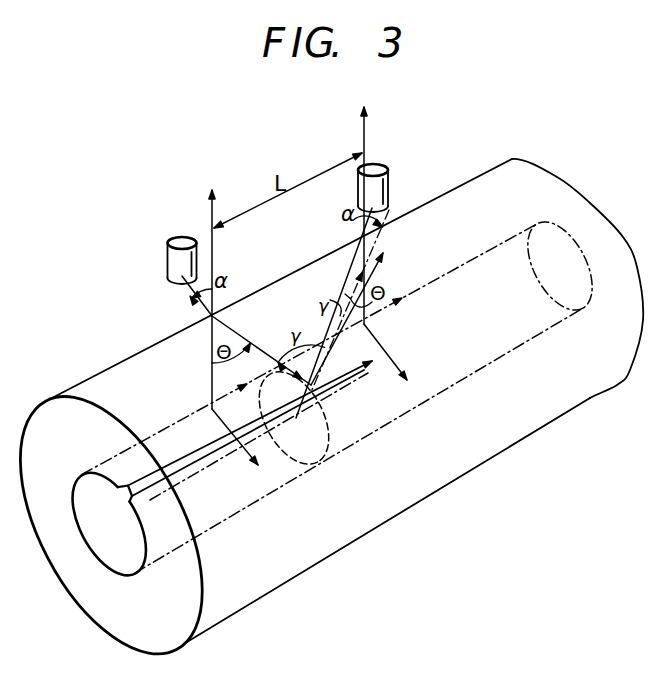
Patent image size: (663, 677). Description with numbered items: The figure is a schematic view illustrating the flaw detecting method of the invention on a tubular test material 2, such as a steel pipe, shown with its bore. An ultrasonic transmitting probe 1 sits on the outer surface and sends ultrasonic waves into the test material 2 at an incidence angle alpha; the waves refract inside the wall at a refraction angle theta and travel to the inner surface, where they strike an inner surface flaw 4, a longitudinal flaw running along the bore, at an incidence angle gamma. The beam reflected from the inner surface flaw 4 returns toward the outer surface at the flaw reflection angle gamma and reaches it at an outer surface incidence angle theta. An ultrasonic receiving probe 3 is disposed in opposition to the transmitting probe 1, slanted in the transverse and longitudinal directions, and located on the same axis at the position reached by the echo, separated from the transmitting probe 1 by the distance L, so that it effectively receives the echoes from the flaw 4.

The ultrasonic transmitting probe 1 is at (167, 262).
The test material 2 is at (130, 358).
The ultrasonic receiving probe 3 is at (388, 186).
The inner surface flaw 4 is at (144, 490).